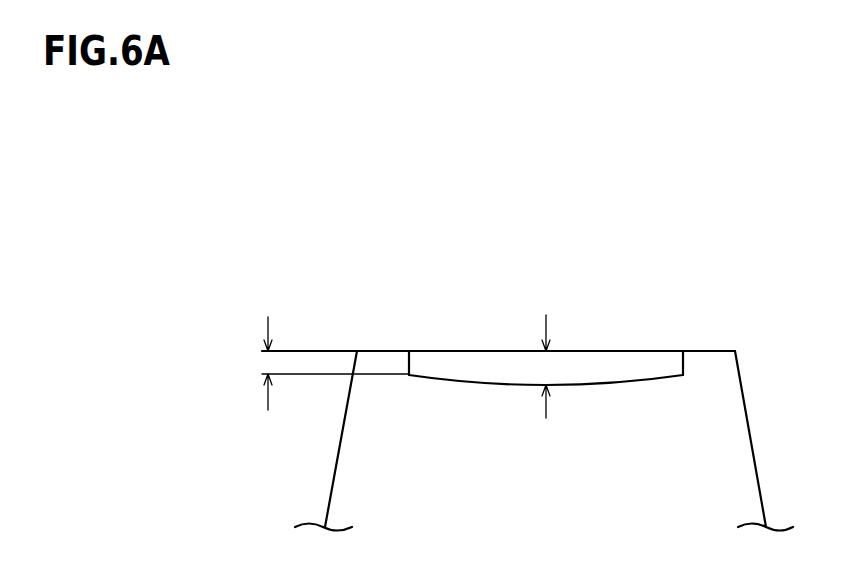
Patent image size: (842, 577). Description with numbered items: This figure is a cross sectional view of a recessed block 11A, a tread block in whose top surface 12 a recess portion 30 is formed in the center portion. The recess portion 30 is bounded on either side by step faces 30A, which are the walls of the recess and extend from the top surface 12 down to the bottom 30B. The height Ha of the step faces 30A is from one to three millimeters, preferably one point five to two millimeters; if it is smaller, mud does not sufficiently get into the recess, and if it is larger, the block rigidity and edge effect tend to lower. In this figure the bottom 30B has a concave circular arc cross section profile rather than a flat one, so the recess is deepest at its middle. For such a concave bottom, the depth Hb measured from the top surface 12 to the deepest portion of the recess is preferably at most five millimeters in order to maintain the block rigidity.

The top surface 12 is at (453, 351).
The recessed block 11A is at (581, 279).
The recess portion 30 is at (603, 345).
The step faces 30A is at (410, 362).
The bottom 30B is at (640, 379).
The height of the step faces Ha is at (317, 363).
The depth of the deepest portion of the recess Hb is at (530, 351).